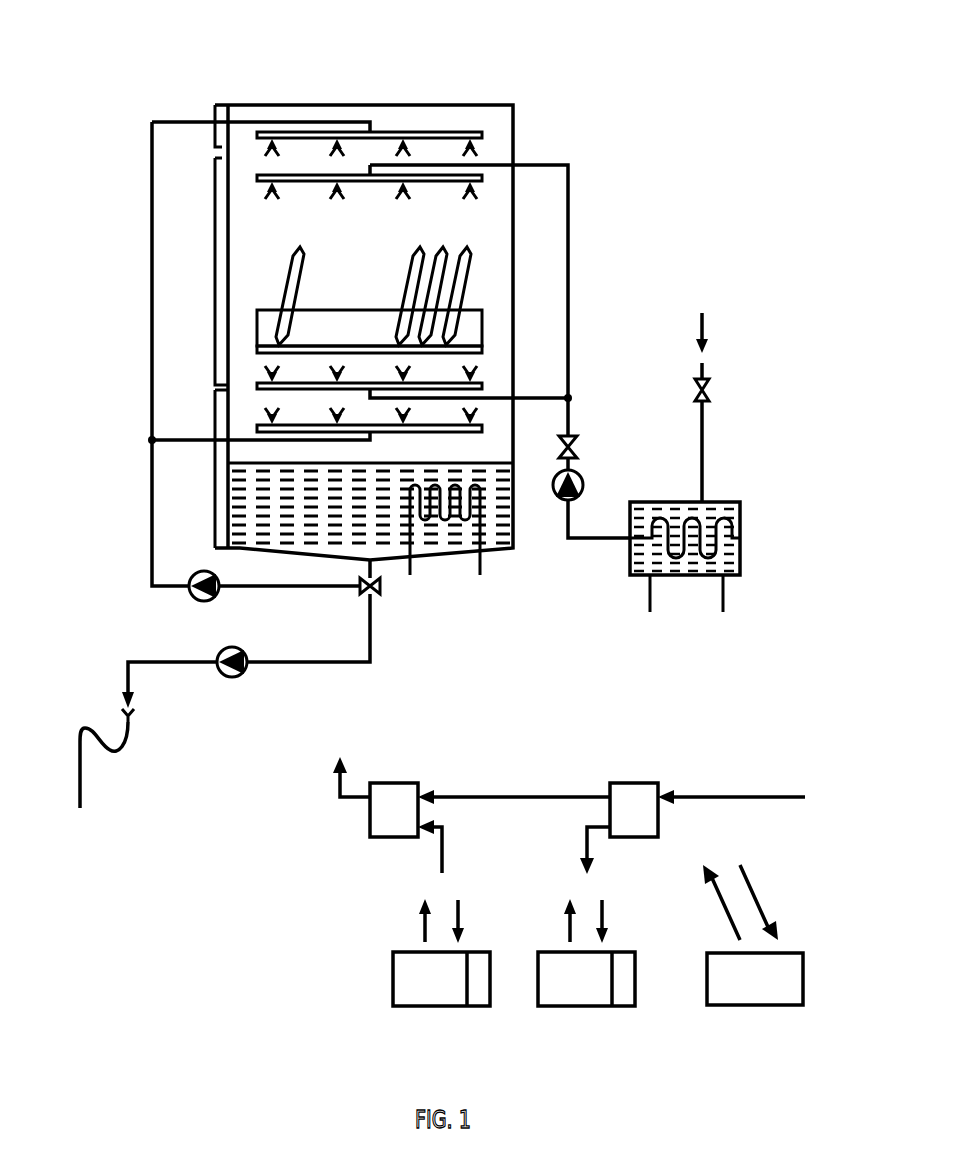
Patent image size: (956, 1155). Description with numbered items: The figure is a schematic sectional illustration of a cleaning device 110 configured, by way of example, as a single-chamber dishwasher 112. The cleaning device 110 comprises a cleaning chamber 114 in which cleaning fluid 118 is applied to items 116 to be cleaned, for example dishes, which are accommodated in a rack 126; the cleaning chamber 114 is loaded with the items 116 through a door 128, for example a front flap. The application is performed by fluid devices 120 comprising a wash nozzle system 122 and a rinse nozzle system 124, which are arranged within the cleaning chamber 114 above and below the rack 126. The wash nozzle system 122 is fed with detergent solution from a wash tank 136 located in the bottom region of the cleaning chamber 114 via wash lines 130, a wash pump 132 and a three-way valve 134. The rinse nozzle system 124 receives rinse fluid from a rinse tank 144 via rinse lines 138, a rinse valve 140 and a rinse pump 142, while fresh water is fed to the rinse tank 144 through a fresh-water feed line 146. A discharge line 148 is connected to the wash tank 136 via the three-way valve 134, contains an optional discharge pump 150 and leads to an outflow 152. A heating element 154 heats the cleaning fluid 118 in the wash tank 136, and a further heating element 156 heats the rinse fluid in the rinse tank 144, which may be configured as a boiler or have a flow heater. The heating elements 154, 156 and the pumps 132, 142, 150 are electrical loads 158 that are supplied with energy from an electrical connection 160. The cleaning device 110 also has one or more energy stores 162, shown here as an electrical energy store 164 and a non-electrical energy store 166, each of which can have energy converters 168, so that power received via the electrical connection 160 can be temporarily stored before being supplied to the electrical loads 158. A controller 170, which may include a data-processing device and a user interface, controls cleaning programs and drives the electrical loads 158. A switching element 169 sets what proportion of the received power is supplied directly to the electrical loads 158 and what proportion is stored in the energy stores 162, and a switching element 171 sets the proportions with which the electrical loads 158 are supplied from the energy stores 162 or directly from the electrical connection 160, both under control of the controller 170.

The cleaning device 110 is at (437, 532).
The single-chamber dishwasher 112 is at (326, 69).
The cleaning chamber 114 is at (513, 131).
The items to be cleaned 116 is at (410, 262).
The cleaning fluid 118 is at (740, 510).
The fluid devices 120 is at (275, 249).
The wash nozzle system 122 is at (430, 130).
The rinse nozzle system 124 is at (360, 188).
The rack 126 is at (378, 309).
The door 128 is at (215, 220).
The wash lines 130 is at (152, 258).
The wash pump 132 is at (204, 602).
The 3-way valve 134 is at (377, 593).
The wash tank 136 is at (322, 560).
The rinse lines 138 is at (568, 195).
The rinse valve 140 is at (578, 448).
The rinse pump 142 is at (583, 484).
The rinse tank 144 is at (693, 577).
The fresh-water feed line 146 is at (702, 430).
The discharge line 148 is at (310, 662).
The discharge pump 150 is at (232, 678).
The outflow 152 is at (118, 752).
The heating element 154 is at (482, 503).
The further heating element 156 is at (740, 545).
The electrical loads 158 is at (459, 590).
The electrical connection 160 is at (771, 797).
The energy stores 162 is at (514, 952).
The electrical energy store 164 is at (462, 990).
The non-electrical energy store 166 is at (607, 990).
The energy converters 168 is at (478, 1006).
The switching element 169 is at (636, 783).
The controller 170 is at (770, 990).
The switching element 171 is at (396, 783).